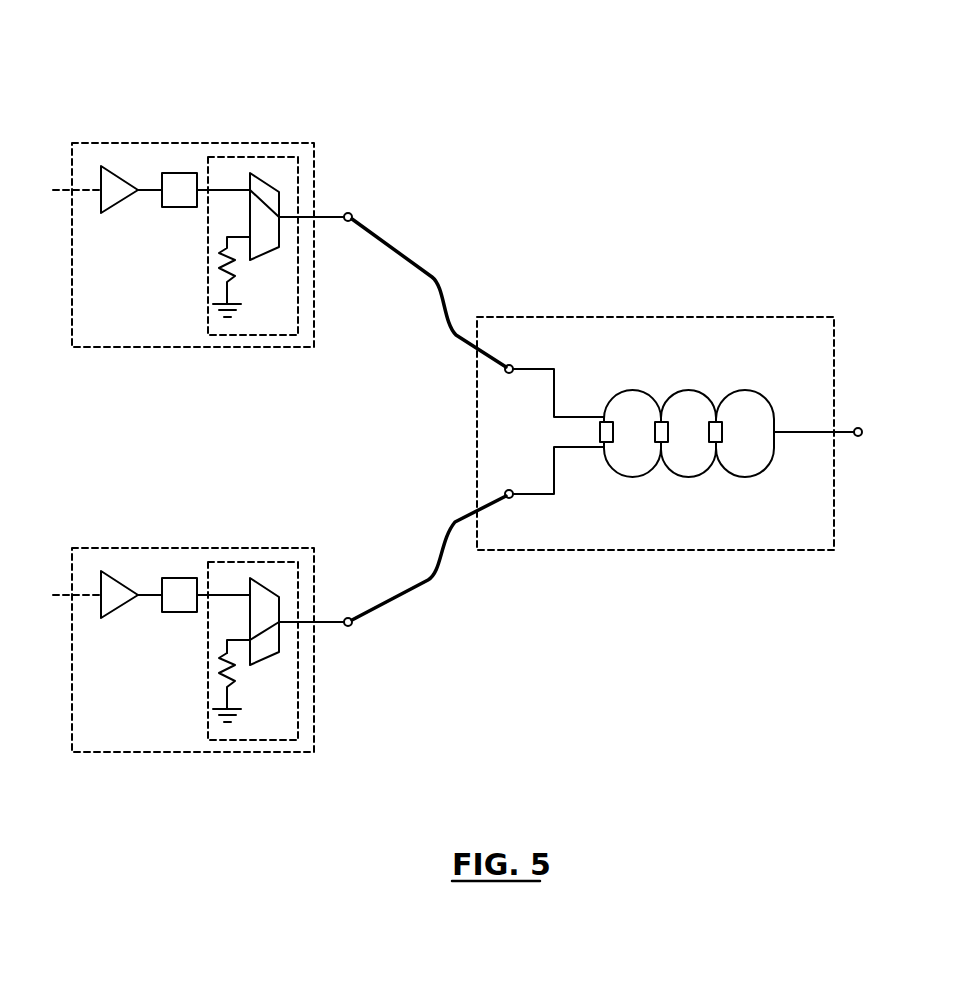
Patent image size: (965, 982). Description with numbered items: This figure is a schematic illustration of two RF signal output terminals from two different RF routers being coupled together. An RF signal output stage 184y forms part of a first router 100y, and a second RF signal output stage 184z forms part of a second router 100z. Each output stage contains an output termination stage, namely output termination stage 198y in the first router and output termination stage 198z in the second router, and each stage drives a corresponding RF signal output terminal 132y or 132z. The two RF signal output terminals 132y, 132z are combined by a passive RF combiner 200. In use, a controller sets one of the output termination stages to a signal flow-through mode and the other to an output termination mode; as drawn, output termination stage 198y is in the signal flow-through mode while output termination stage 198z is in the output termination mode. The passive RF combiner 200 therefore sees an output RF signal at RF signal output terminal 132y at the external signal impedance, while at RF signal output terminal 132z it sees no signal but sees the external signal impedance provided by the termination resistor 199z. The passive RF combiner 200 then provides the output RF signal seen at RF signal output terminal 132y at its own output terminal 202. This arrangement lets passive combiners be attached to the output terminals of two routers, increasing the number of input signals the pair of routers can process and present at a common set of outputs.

The first router 100y is at (127, 143).
The RF signal output stage 184y is at (222, 143).
The output termination stage 198y is at (298, 168).
The RF signal output terminal 132y is at (352, 215).
The second router 100z is at (127, 753).
The second RF signal output stage 184z is at (223, 753).
The termination resistor 199z is at (233, 688).
The output termination stage 198z is at (298, 727).
The RF signal output terminal 132z is at (352, 624).
The passive RF combiner 200 is at (775, 317).
The output terminal 202 is at (862, 430).